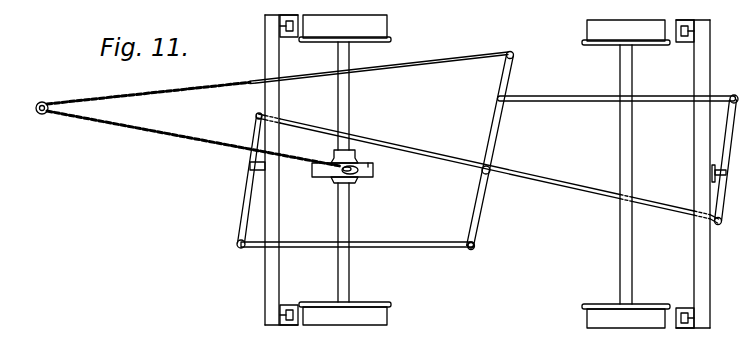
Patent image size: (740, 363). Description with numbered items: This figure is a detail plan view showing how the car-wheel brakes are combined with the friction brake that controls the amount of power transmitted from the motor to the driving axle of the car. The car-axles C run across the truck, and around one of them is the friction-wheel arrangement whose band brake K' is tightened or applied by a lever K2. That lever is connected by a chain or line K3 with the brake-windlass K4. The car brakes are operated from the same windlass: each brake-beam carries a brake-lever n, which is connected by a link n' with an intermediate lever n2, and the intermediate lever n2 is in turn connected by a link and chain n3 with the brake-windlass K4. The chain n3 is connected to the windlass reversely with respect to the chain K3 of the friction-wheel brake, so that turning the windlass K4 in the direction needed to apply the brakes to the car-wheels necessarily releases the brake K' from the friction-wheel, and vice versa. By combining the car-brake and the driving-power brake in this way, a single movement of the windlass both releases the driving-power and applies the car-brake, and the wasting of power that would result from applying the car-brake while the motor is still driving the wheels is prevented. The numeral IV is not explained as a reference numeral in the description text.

The frame IV is at (291, 40).
The car-axle C is at (349, 105).
The brake K' is at (358, 165).
The lever K2 is at (345, 180).
The chain or line K3 is at (179, 139).
The brake-windlass K4 is at (43, 116).
The brake-lever n is at (475, 174).
The link n' is at (489, 171).
The intermediate lever n2 is at (481, 208).
The link and chain n3 is at (203, 81).